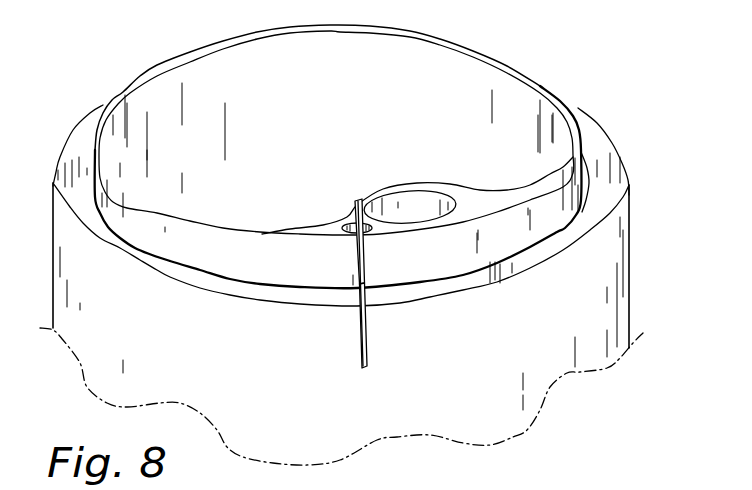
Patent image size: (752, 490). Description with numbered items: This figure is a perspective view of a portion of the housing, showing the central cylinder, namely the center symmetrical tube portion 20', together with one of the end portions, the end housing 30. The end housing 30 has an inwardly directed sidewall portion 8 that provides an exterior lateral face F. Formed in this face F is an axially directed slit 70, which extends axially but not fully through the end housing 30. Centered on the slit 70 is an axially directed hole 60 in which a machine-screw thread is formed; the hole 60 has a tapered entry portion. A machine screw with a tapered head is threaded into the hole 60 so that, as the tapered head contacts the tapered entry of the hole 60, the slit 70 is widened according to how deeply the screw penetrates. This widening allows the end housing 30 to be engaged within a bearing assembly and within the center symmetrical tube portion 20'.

The center symmetrical tube portion 20' is at (369, 285).
The end housing 30 is at (581, 99).
The exterior lateral face F is at (471, 201).
The inwardly directed sidewall portion 8 is at (362, 200).
The axially directed hole 60 is at (343, 217).
The axially directed slit 70 is at (353, 267).